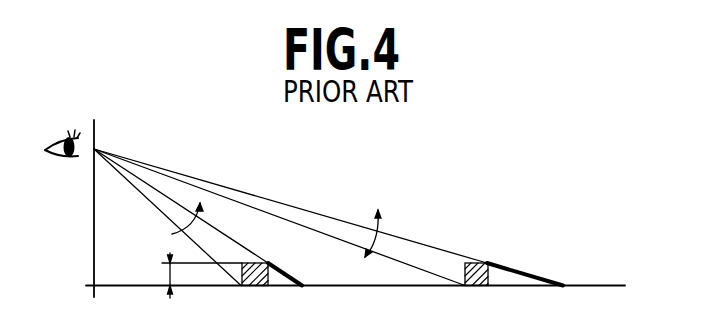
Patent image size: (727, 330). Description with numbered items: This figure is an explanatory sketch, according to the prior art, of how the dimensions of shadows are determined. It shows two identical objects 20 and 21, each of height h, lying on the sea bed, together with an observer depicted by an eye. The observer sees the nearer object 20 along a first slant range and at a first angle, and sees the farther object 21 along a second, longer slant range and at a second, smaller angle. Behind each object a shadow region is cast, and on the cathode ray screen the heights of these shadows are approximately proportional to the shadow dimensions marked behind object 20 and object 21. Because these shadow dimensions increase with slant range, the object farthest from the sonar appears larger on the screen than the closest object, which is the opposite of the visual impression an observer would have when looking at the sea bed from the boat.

The object 20 is at (258, 287).
The object 21 is at (480, 287).
The height h is at (194, 275).